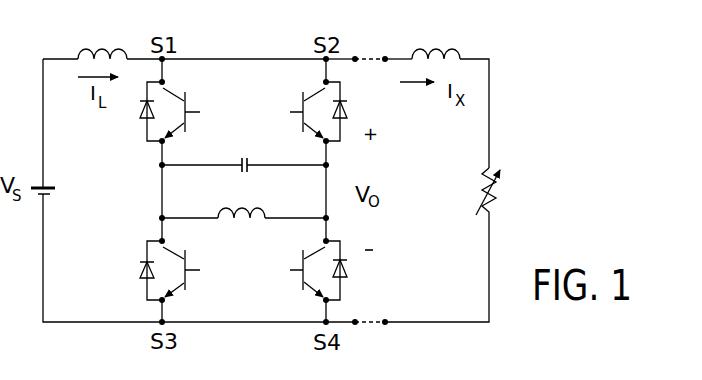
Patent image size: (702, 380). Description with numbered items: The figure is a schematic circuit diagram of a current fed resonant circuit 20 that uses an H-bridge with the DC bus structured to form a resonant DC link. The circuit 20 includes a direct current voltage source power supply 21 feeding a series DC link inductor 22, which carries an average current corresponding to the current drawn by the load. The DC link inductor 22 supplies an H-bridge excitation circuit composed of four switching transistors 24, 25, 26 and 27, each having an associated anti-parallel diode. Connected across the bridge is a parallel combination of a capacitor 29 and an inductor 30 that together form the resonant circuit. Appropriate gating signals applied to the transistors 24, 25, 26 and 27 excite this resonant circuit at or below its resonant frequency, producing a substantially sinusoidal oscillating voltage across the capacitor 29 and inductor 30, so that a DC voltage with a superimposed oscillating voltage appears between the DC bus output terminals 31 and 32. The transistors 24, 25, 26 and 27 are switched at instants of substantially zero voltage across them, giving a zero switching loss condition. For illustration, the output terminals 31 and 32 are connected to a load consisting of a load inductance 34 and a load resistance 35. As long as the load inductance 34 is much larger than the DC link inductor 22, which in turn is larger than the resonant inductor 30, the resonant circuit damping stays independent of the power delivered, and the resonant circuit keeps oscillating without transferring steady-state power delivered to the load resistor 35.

The current fed resonant circuit 20 is at (236, 52).
The DC voltage source power supply 21 is at (50, 185).
The series DC link inductor 22 is at (81, 51).
The switching transistor 24 is at (187, 97).
The switching transistor 25 is at (302, 98).
The switching transistor 26 is at (187, 289).
The switching transistor 27 is at (302, 289).
The capacitor 29 is at (247, 161).
The inductor 30 is at (265, 207).
The DC bus output terminal 31 is at (356, 56).
The DC bus output terminal 32 is at (357, 326).
The load inductance 34 is at (462, 52).
The load resistance 35 is at (495, 206).